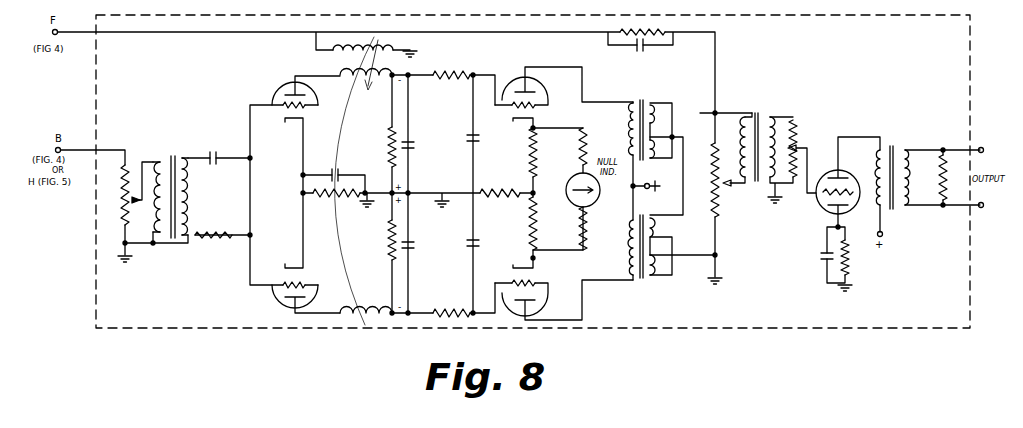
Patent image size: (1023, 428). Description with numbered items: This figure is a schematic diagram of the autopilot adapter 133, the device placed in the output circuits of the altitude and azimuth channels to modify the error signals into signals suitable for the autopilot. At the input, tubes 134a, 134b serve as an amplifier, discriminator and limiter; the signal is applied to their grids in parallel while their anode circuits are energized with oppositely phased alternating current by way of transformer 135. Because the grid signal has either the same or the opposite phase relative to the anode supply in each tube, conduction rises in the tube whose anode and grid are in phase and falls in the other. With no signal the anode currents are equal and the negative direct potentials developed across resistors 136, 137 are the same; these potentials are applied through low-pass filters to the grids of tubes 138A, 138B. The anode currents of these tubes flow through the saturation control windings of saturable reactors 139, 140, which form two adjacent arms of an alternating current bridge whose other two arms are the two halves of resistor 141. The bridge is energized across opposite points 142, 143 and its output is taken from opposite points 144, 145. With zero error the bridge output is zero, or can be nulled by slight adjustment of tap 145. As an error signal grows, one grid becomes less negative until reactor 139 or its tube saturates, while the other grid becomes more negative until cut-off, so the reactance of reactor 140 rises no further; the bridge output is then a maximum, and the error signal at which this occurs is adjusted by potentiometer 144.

The autopilot adapter 133 is at (766, 327).
The tube 134a is at (272, 96).
The tube 134b is at (272, 299).
The transformer 135 is at (321, 59).
The resistor 136 is at (388, 147).
The resistor 137 is at (388, 246).
The tube 138A is at (539, 79).
The tube 138B is at (540, 302).
The saturable reactor 139 is at (645, 106).
The saturable reactor 140 is at (644, 286).
The resistor 141 is at (675, 141).
The bridge energizing point 142 is at (722, 112).
The bridge energizing point 143 is at (722, 255).
The potentiometer 144 is at (138, 165).
The tap 145 is at (722, 193).